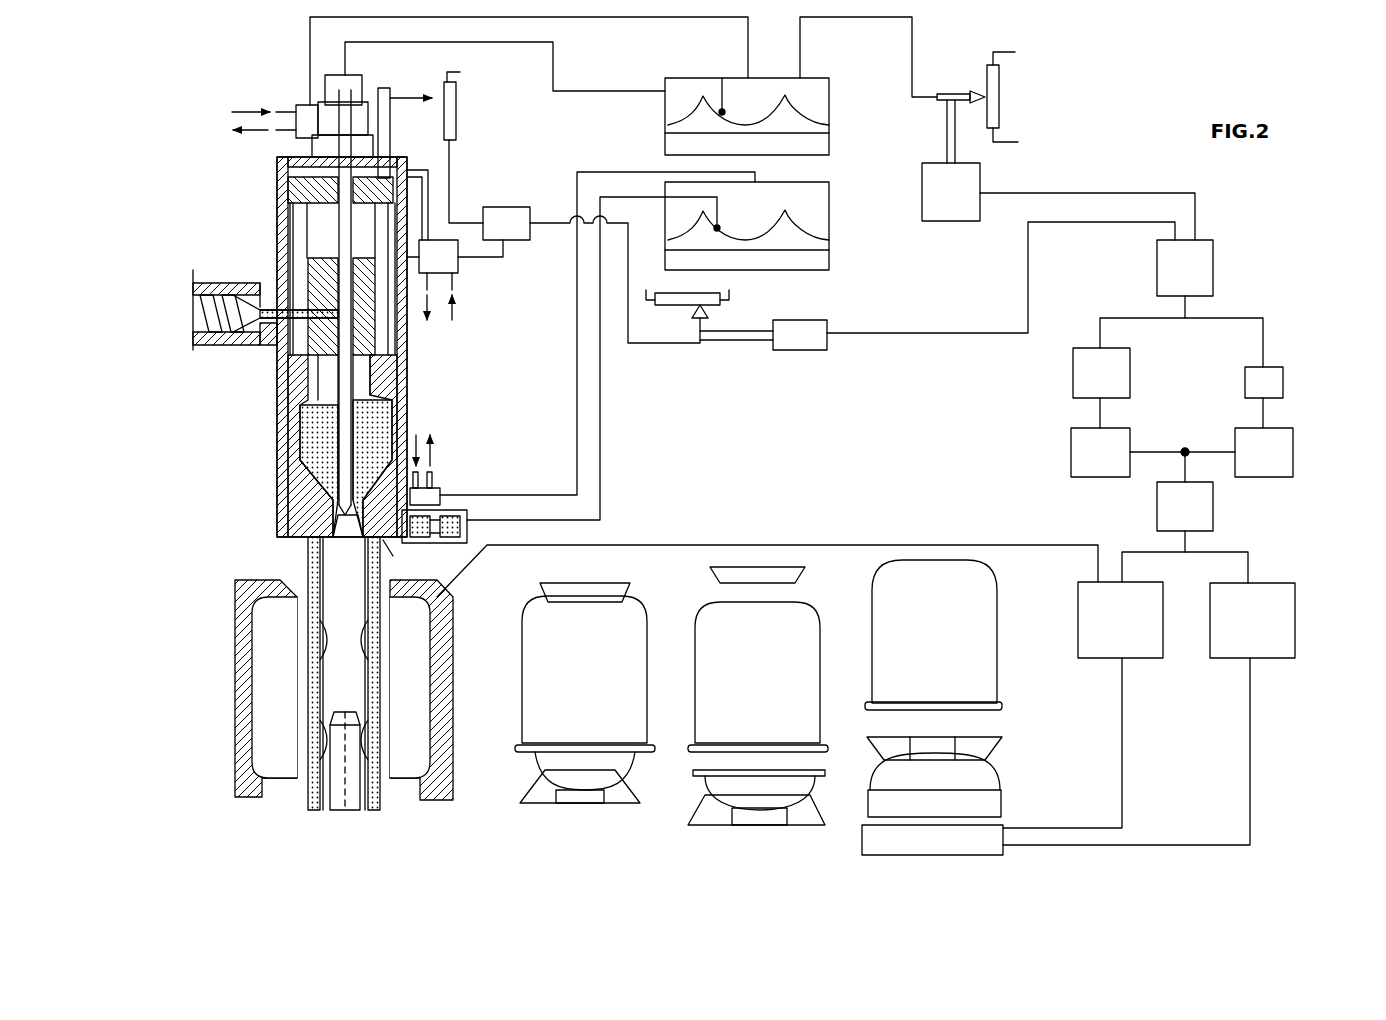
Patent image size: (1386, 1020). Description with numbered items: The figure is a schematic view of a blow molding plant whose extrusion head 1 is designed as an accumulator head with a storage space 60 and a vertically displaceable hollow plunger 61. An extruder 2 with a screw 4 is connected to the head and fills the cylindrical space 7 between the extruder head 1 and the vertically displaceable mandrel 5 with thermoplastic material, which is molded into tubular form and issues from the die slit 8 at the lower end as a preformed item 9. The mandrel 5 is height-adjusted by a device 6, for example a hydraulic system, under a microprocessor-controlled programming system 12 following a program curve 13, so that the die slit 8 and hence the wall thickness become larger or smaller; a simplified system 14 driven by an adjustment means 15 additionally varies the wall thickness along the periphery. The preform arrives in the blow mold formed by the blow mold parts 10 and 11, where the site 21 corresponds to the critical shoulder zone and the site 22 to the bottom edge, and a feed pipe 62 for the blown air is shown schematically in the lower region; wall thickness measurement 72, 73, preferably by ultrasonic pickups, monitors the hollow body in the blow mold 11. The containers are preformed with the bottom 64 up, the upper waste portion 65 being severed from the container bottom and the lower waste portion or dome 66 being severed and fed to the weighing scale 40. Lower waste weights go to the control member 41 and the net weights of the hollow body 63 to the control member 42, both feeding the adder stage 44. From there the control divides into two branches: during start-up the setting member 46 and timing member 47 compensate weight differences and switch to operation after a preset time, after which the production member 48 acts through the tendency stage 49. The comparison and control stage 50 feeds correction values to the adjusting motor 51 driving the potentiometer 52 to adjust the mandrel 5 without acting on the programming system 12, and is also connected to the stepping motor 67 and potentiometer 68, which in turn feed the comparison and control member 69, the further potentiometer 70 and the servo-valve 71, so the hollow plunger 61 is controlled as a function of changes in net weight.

The extruder head 1 is at (276, 421).
The extruder 2 is at (225, 348).
The screw 4 is at (220, 297).
The mandrel 5 is at (320, 548).
The device 6 is at (368, 115).
The cylindrical space 7 is at (400, 375).
The die slit 8 is at (330, 505).
The preformed item 9 is at (322, 600).
The blow mold part 10 is at (237, 642).
The blow mold part 11 is at (445, 672).
The programming system 12 is at (663, 110).
The program curve 13 is at (738, 122).
The system 14 is at (403, 557).
The adjustment means 15 is at (445, 500).
The site 21 is at (265, 610).
The site 22 is at (268, 762).
The weighing scale 40 is at (975, 840).
The control member 41 is at (1085, 630).
The control member 42 is at (1268, 628).
The adder stage 44 is at (1200, 510).
The setting member 46 is at (1280, 455).
The timing member 47 is at (1255, 382).
The production member 48 is at (1080, 450).
The tendency stage 49 is at (1085, 378).
The comparison and control stage 50 is at (1170, 272).
The adjusting motor 51 is at (930, 175).
The potentiometer 52 is at (998, 106).
The storage space 60 is at (300, 450).
The hollow plunger 61 is at (398, 400).
The feed pipe 62 is at (340, 805).
The hollow body 63 is at (635, 693).
The bottom 64 is at (582, 600).
The upper waste portion 65 is at (608, 585).
The lower waste portion 66 is at (972, 775).
The adjustment motor 67 is at (800, 340).
The potentiometer 68 is at (672, 303).
The comparison and control member 69 is at (508, 205).
The potentiometer 70 is at (456, 112).
The servo-valve 71 is at (460, 268).
The wall thickness measurement 72 is at (422, 610).
The wall thickness measurement 73 is at (430, 628).